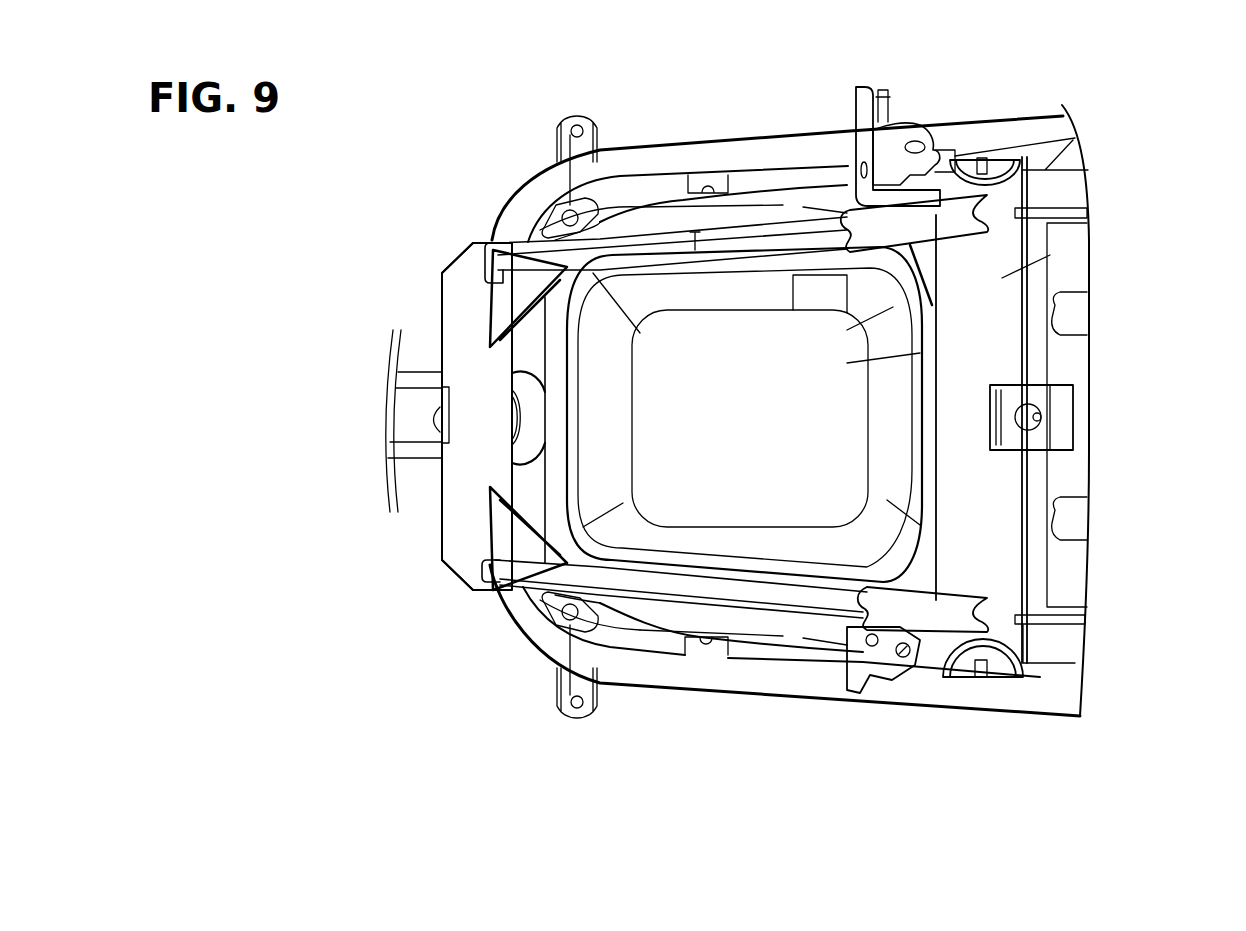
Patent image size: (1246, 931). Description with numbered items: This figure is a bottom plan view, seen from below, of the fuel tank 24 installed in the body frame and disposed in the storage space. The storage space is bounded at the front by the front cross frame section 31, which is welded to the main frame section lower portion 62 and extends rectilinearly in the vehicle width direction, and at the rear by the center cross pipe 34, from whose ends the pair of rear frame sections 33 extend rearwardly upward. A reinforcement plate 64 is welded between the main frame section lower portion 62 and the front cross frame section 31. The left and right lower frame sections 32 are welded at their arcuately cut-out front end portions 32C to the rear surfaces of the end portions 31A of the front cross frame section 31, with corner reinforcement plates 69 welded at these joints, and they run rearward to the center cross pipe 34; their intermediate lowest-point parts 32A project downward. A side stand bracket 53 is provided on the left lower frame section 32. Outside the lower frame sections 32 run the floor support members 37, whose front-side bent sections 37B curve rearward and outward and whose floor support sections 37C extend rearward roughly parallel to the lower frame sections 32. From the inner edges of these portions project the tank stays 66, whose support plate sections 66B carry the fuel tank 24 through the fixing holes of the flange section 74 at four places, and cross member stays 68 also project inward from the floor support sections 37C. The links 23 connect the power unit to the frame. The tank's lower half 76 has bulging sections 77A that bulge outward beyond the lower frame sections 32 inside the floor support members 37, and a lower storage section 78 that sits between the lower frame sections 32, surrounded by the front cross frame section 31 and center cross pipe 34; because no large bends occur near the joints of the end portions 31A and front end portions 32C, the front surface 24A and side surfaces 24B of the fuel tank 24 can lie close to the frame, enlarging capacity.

The link 23 is at (1073, 305).
The fuel tank 24 is at (660, 623).
The front surface 24A is at (597, 402).
The side surface 24B is at (740, 288).
The front cross frame section 31 is at (462, 503).
The end portion 31A is at (455, 273).
The lower frame section 32 is at (698, 228).
The lowest-point part 32A is at (650, 248).
The front end portion 32C is at (492, 240).
The rear frame section 33 is at (1063, 185).
The center cross pipe 34 is at (1002, 278).
The floor support member 37 is at (806, 133).
The front-side bent section 37B is at (540, 192).
The floor support section 37C is at (828, 197).
The side stand bracket 53 is at (868, 90).
The main frame section lower portion 62 is at (512, 372).
The reinforcement plate 64 is at (420, 427).
The tank stay 66 is at (603, 215).
The support plate section 66B is at (574, 116).
The cross member stay 68 is at (712, 189).
The corner reinforcement plate 69 is at (510, 277).
The flange section 74 is at (695, 236).
The lower half 76 is at (855, 392).
The bulging section 77A is at (763, 213).
The lower storage section 78 is at (847, 360).